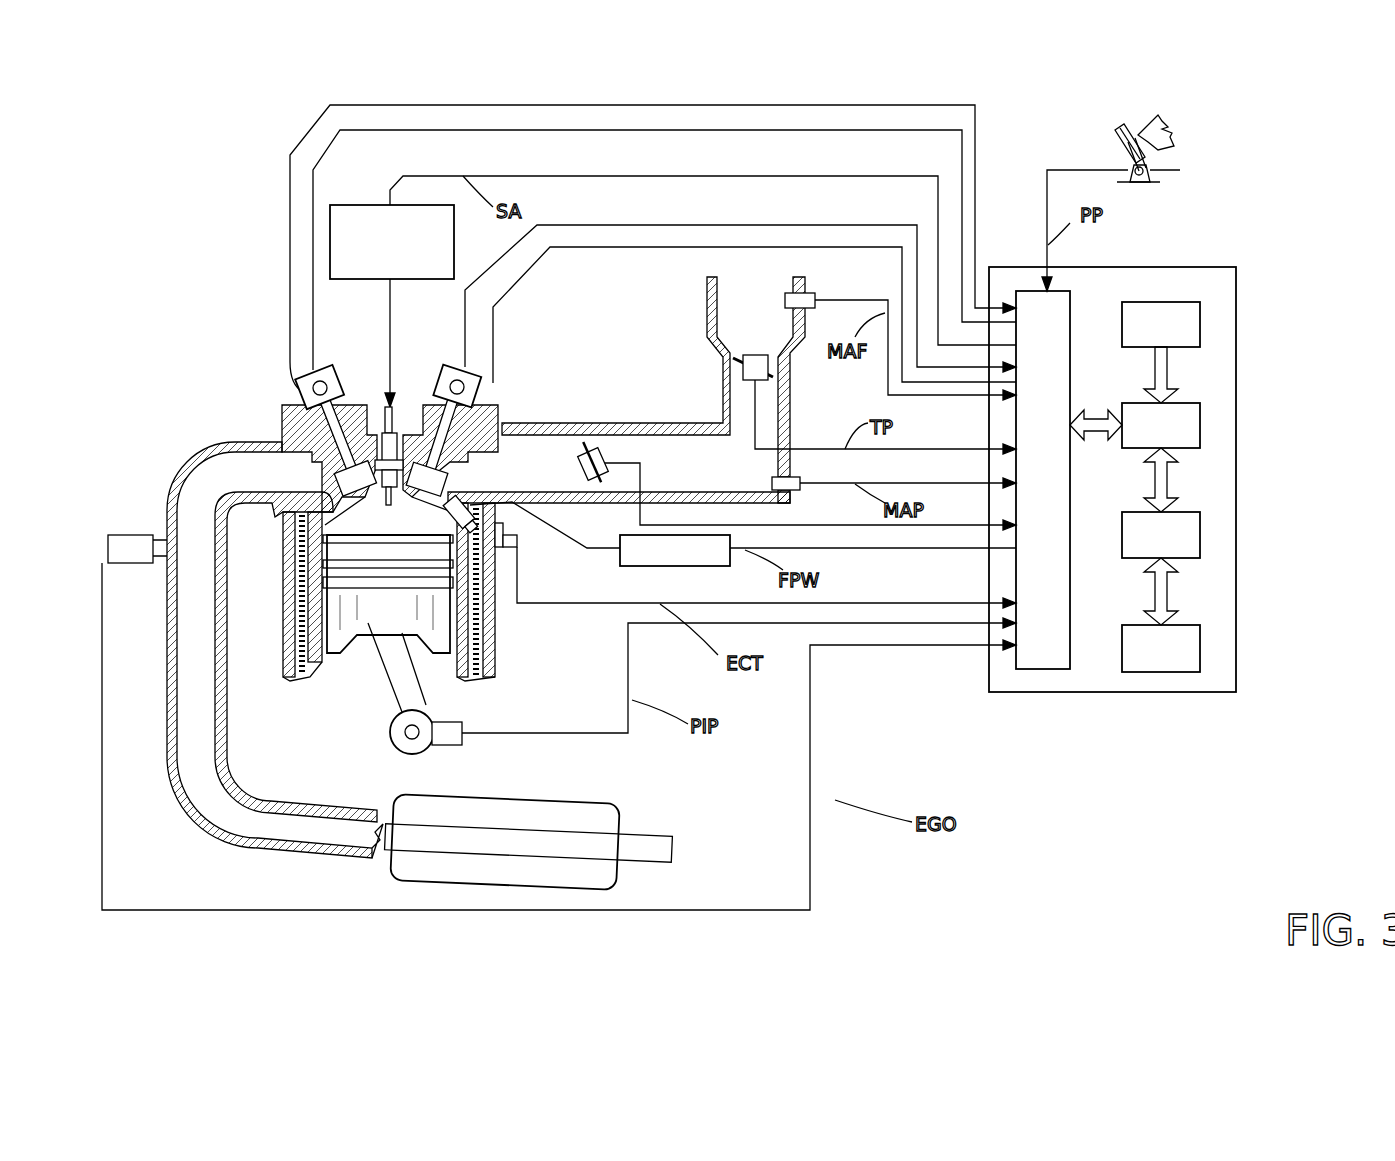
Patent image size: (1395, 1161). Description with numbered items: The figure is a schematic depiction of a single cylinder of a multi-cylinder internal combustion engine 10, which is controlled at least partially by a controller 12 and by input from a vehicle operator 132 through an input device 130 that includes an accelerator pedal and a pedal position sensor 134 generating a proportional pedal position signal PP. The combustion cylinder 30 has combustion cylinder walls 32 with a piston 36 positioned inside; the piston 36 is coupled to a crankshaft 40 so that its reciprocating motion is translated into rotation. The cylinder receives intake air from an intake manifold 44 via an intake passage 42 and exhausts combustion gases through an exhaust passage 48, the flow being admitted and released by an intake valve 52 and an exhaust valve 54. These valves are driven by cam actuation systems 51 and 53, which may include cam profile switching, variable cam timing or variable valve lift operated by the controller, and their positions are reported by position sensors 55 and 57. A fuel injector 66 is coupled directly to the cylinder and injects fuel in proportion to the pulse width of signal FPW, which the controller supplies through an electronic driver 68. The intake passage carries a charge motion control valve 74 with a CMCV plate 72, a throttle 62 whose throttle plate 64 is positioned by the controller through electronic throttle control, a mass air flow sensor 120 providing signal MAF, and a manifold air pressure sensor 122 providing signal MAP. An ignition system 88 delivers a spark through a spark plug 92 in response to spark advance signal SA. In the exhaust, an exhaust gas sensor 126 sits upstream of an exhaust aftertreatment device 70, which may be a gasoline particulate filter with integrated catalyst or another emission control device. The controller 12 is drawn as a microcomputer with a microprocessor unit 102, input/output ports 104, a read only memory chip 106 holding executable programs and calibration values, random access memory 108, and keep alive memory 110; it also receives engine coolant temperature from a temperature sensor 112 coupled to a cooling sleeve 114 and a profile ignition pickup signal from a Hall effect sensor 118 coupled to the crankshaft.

The internal combustion engine 10 is at (208, 355).
The controller 12 is at (1223, 267).
The combustion cylinder 30 is at (367, 515).
The combustion cylinder walls 32 is at (330, 670).
The piston 36 is at (368, 623).
The crankshaft 40 is at (398, 752).
The intake passage 42 is at (768, 330).
The intake manifold 44 is at (697, 473).
The exhaust passage 48 is at (262, 482).
The cam actuation system 51 is at (447, 373).
The intake valve 52 is at (433, 478).
The cam actuation system 53 is at (325, 370).
The exhaust valve 54 is at (342, 483).
The position sensor 55 is at (470, 383).
The position sensor 57 is at (302, 392).
The throttle 62 is at (770, 365).
The throttle plate 64 is at (733, 362).
The fuel injector 66 is at (500, 505).
The electronic driver 68 is at (630, 566).
The exhaust aftertreatment device 70 is at (575, 800).
The CMCV plate 72 is at (580, 452).
The charge motion control valve 74 is at (602, 443).
The ignition system 88 is at (673, 288).
The spark plug 92 is at (398, 420).
The microprocessor unit 102 is at (1201, 420).
The input/output ports 104 is at (1072, 300).
The read only memory chip 106 is at (1201, 320).
The random access memory 108 is at (1201, 535).
The keep alive memory 110 is at (1201, 645).
The temperature sensor 112 is at (500, 543).
The cooling sleeve 114 is at (477, 623).
The Hall effect sensor 118 is at (449, 750).
The mass air flow sensor 120 is at (805, 293).
The manifold air pressure sensor 122 is at (797, 490).
The exhaust gas sensor 126 is at (108, 537).
The input device 130 is at (1113, 142).
The vehicle operator 132 is at (1170, 130).
The pedal position sensor 134 is at (1160, 170).